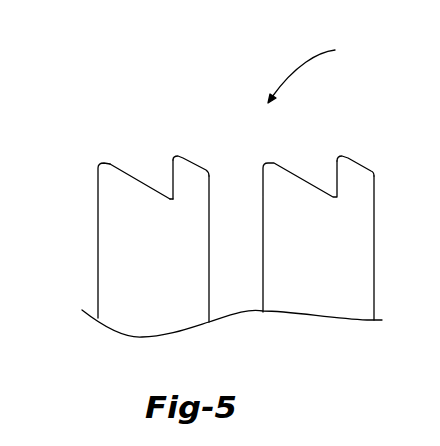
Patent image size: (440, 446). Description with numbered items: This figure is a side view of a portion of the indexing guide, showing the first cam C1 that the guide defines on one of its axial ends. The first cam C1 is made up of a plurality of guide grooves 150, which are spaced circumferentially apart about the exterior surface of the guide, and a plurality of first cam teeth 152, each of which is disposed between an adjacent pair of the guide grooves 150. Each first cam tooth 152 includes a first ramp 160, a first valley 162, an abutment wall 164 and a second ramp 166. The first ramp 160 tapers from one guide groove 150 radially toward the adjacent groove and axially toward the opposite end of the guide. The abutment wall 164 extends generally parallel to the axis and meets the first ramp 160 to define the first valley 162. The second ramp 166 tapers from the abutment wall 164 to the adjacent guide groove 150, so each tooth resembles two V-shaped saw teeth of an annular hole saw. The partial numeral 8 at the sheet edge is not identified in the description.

The guide groove 150 is at (229, 229).
The first cam tooth 152 is at (108, 247).
The first ramp 160 is at (112, 164).
The first valley 162 is at (170, 200).
The abutment wall 164 is at (173, 160).
The second ramp 166 is at (192, 168).
The first cam C1 is at (313, 70).
The partial numeral 8 is at (435, 317).